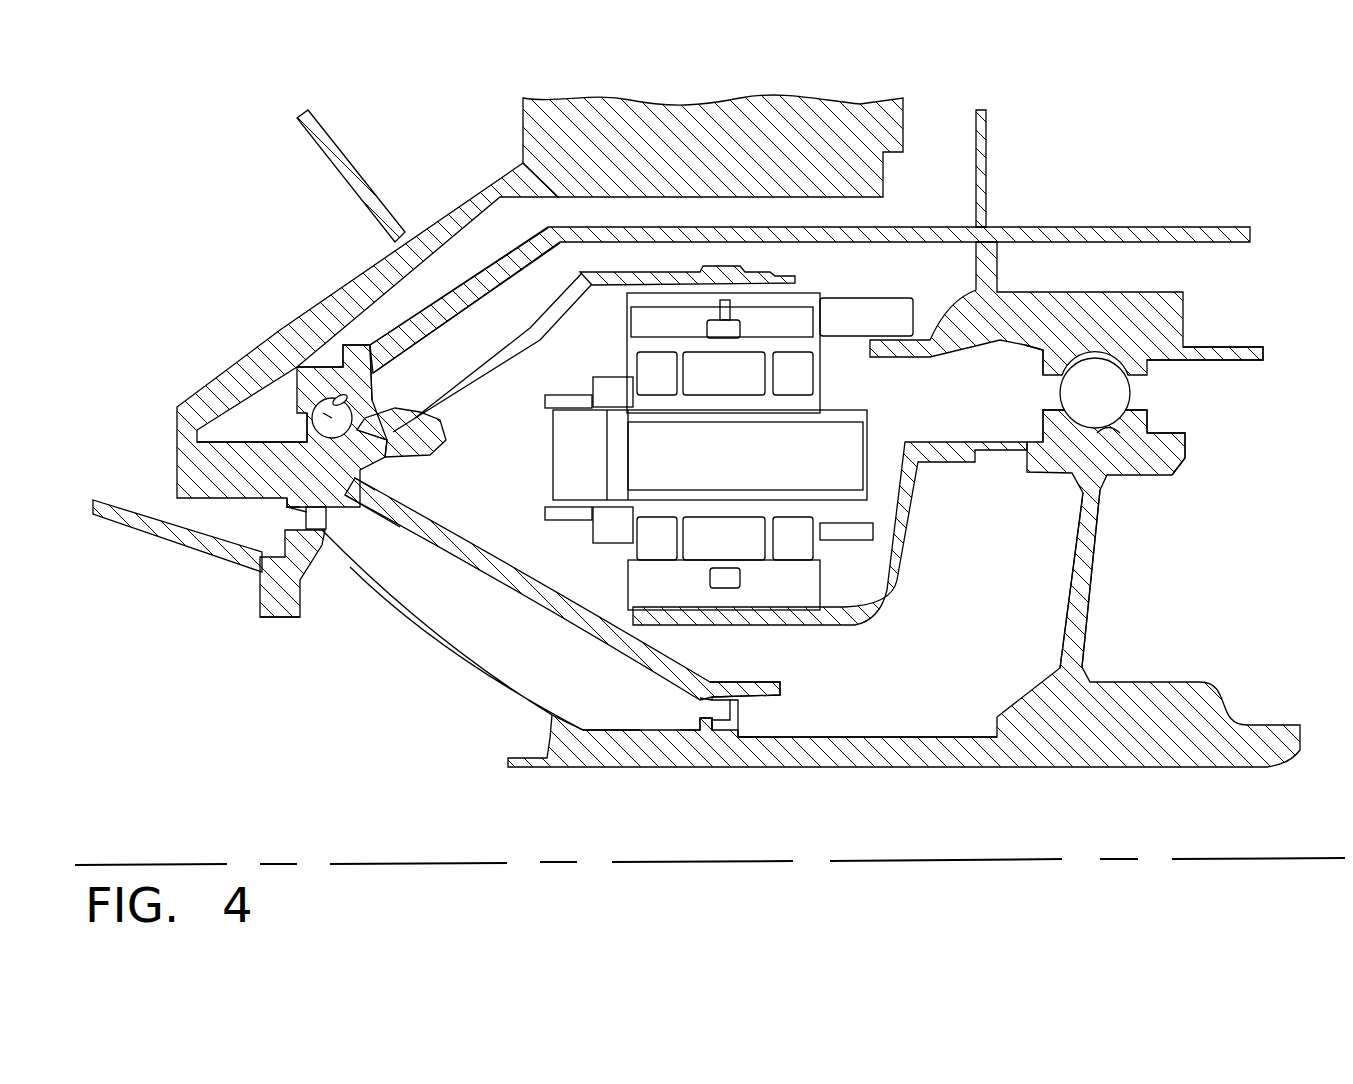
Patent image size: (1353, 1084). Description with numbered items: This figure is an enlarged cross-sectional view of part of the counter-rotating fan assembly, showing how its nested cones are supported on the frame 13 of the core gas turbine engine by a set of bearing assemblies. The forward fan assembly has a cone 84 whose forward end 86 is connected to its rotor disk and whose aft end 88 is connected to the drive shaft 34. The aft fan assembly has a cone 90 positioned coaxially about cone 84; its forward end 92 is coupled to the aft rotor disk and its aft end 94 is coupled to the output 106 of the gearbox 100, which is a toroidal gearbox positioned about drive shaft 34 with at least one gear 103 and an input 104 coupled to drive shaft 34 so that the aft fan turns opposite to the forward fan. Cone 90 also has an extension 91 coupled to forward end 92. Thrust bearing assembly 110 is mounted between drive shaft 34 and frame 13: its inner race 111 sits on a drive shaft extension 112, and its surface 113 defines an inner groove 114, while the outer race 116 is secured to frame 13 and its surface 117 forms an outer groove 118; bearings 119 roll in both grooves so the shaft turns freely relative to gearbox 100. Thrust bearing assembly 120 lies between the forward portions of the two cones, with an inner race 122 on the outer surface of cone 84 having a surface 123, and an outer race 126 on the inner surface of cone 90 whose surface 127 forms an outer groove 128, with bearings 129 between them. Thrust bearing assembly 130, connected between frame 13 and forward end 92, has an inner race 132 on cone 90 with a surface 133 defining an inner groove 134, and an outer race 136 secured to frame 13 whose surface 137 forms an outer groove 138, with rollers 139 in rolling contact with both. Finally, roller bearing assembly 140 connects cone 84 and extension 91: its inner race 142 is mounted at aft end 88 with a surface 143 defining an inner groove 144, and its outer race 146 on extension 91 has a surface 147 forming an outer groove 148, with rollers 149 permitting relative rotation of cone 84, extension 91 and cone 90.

The frame 13 is at (1137, 225).
The drive shaft 34 is at (752, 768).
The cone 84 is at (432, 634).
The forward end 86 is at (258, 608).
The aft end 88 is at (623, 755).
The cone 90 is at (507, 338).
The extension 91 is at (528, 592).
The forward end 92 is at (203, 473).
The aft end 94 is at (597, 277).
The gearbox 100 is at (764, 472).
The gear 103 is at (718, 471).
The input 104 is at (880, 585).
The output 106 is at (765, 343).
The thrust bearing assembly 110 is at (914, 607).
The inner race 111 is at (1068, 440).
The drive shaft extension 112 is at (1093, 572).
The surface 113 is at (1190, 420).
The inner groove 114 is at (1110, 432).
The outer race 116 is at (1140, 318).
The surface 117 is at (1043, 412).
The outer groove 118 is at (1130, 384).
The bearing 119 is at (1076, 407).
The thrust bearing assembly 120 is at (255, 562).
The inner race 122 is at (322, 533).
The surface 123 is at (340, 527).
The outer race 126 is at (287, 507).
The surface 127 is at (350, 507).
The outer groove 128 is at (293, 512).
The bearing 129 is at (400, 527).
The thrust bearing assembly 130 is at (335, 335).
The inner race 132 is at (352, 437).
The surface 133 is at (415, 418).
The inner groove 134 is at (340, 402).
The outer race 136 is at (327, 383).
The surface 137 is at (283, 428).
The outer groove 138 is at (330, 384).
The roller 139 is at (323, 413).
The roller bearing assembly 140 is at (762, 718).
The inner race 142 is at (710, 730).
The surface 143 is at (758, 712).
The inner groove 144 is at (700, 720).
The outer race 146 is at (738, 683).
The surface 147 is at (732, 710).
The outer groove 148 is at (705, 700).
The roller 149 is at (735, 705).